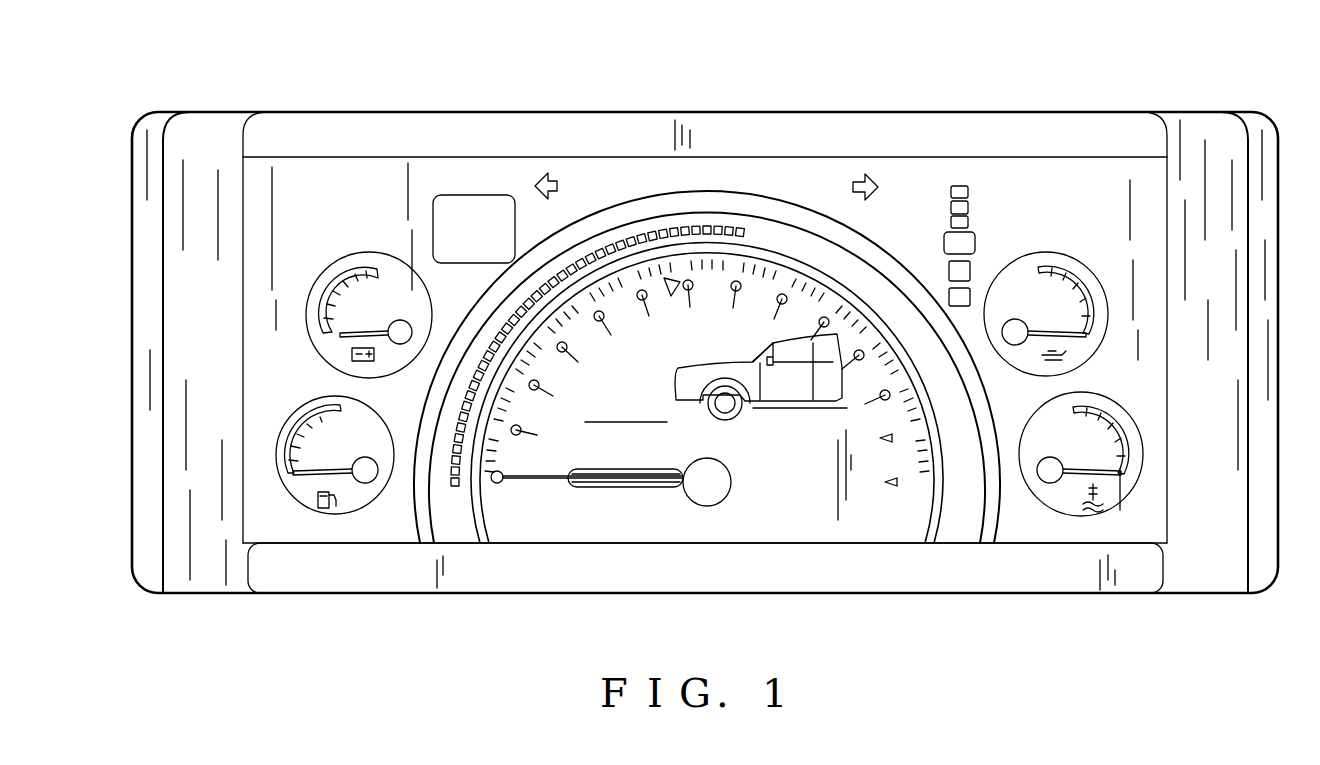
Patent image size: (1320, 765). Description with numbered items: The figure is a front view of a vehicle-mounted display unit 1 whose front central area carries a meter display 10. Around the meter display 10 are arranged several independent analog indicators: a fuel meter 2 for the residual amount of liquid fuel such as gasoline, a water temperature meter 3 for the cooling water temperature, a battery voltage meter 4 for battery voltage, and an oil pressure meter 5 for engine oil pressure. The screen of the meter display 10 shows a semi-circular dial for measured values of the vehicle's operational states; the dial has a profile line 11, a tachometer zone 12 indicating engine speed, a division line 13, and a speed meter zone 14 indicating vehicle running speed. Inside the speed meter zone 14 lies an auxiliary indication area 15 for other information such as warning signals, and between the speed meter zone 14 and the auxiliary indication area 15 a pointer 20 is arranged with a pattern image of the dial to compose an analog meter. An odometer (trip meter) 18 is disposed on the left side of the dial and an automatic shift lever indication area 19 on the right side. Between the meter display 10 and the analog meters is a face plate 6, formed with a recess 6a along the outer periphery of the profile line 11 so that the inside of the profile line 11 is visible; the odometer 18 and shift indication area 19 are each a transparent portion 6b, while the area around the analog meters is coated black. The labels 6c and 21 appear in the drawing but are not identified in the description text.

The vehicle-mounted display unit 1 is at (508, 110).
The fuel meter 2 is at (343, 505).
The water temperature meter 3 is at (1070, 510).
The battery voltage meter 4 is at (350, 262).
The oil pressure meter 5 is at (1030, 262).
The face plate 6 is at (1090, 222).
The recess 6a is at (1003, 520).
The transparent portion 6b is at (917, 172).
The side portion of dial plate 6c is at (1128, 322).
The meter display 10 is at (542, 208).
The profile line 11 is at (572, 230).
The tachometer zone 12 is at (830, 250).
The division line 13 is at (847, 295).
The speed meter zone 14 is at (527, 393).
The auxiliary indication area 15 is at (779, 420).
The odometer (trip meter) 18 is at (462, 197).
The automatic shift lever indication area 19 is at (975, 197).
The pointer 20 is at (703, 258).
The tachometer display 21 is at (455, 520).